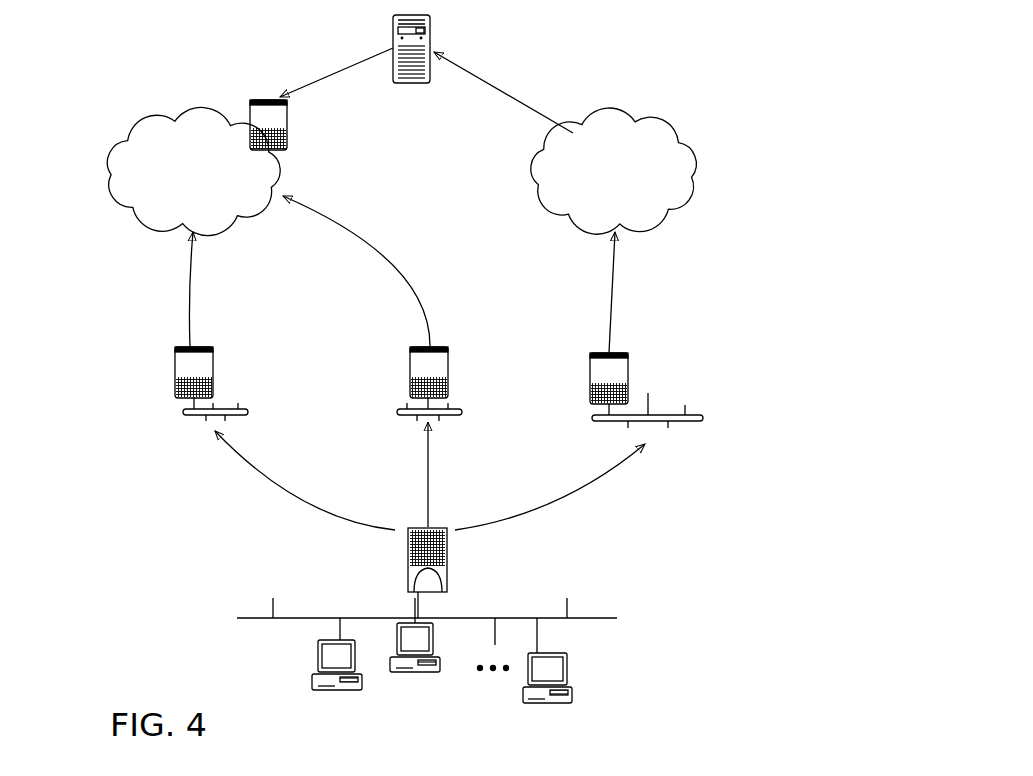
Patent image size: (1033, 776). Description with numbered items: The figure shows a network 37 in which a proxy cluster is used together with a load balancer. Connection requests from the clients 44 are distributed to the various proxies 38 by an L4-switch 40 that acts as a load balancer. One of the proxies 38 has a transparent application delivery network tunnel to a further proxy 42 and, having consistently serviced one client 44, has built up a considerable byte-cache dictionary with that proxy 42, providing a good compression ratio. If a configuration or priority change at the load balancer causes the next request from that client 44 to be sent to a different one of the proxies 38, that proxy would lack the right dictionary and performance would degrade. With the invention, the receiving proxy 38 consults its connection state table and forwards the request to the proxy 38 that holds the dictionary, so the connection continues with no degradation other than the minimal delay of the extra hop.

The network 37 is at (546, 50).
The proxy 42 is at (312, 125).
The proxies 38 is at (451, 386).
The L4-switch 40 is at (519, 560).
The client 44 is at (448, 684).